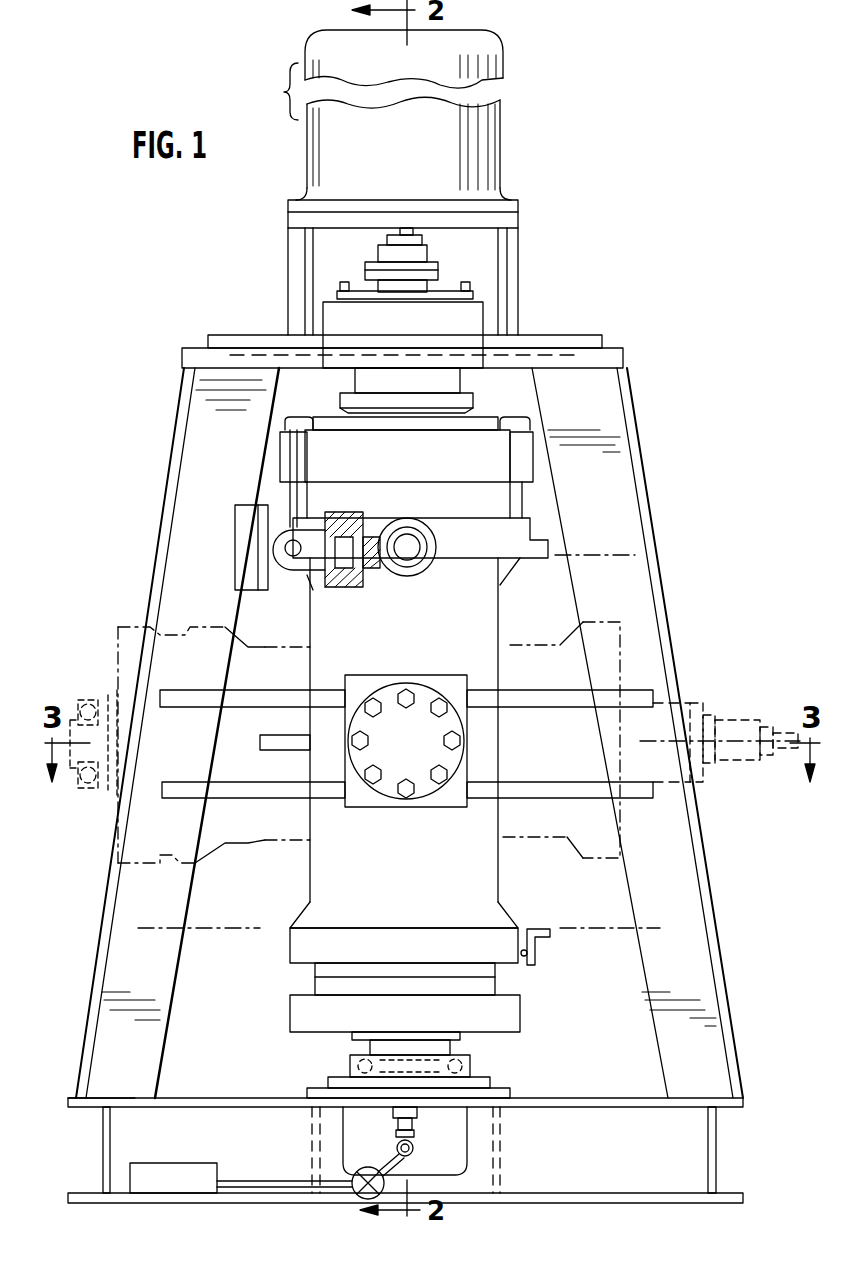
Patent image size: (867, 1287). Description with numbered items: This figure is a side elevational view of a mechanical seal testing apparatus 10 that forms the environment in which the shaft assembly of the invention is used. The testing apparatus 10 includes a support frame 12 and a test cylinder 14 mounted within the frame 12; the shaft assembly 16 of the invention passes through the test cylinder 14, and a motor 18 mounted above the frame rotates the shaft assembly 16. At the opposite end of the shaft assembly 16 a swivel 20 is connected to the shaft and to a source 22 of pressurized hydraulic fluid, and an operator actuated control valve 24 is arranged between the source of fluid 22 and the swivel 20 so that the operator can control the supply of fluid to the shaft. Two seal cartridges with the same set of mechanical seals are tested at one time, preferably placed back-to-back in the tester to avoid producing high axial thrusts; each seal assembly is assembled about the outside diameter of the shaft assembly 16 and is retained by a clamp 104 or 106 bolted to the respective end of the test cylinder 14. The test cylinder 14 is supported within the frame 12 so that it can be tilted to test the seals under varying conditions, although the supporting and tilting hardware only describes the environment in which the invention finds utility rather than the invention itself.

The mechanical seal testing apparatus 10 is at (655, 294).
The support frame 12 is at (637, 575).
The test cylinder 14 is at (510, 612).
The shaft assembly 16 is at (486, 401).
The motor 18 is at (503, 155).
The swivel 20 is at (420, 1127).
The source of pressurized hydraulic fluid 22 is at (182, 1168).
The operator actuated control valve 24 is at (385, 1183).
The clamp 104 is at (298, 448).
The clamp 106 is at (510, 1015).